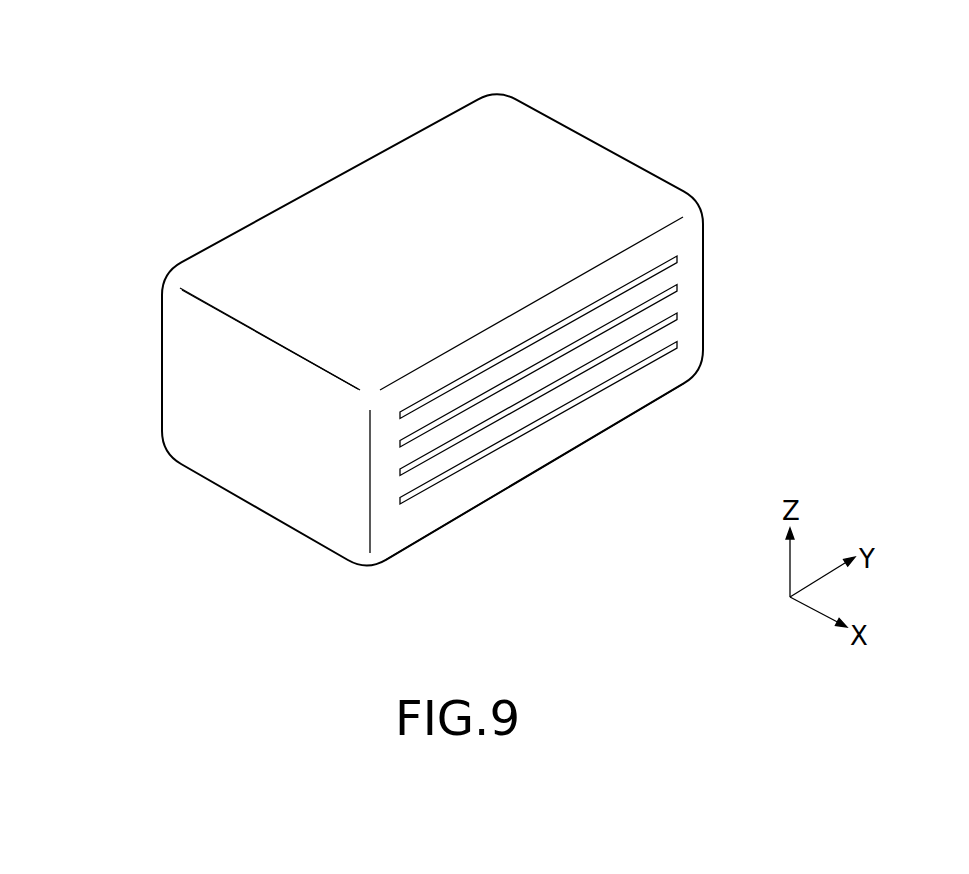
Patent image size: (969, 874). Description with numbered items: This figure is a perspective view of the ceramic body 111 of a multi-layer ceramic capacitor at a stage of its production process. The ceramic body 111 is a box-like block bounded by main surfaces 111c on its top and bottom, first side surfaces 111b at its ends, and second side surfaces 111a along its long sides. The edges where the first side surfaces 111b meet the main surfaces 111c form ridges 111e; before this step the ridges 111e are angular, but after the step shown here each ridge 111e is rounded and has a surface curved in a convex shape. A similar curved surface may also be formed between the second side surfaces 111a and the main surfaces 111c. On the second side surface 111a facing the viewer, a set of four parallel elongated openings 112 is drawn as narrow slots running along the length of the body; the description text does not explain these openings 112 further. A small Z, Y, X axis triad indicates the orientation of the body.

The ceramic body 111 is at (542, 88).
The second side surface 111a is at (522, 477).
The first side surface 111b is at (172, 427).
The main surface 111c is at (409, 218).
The ridge 111e is at (281, 334).
The slots (vent openings) 112 is at (627, 286).